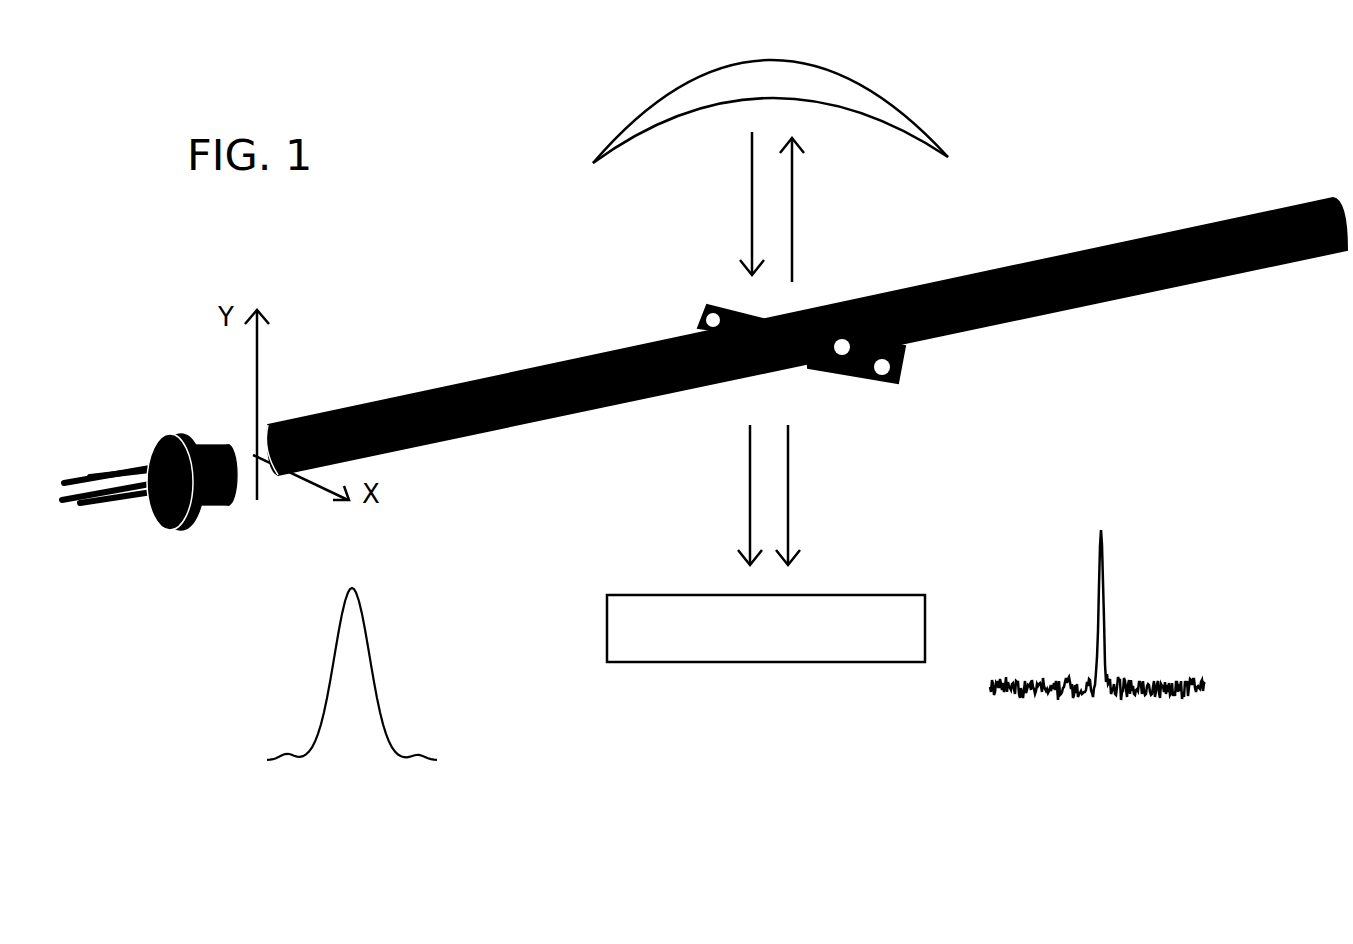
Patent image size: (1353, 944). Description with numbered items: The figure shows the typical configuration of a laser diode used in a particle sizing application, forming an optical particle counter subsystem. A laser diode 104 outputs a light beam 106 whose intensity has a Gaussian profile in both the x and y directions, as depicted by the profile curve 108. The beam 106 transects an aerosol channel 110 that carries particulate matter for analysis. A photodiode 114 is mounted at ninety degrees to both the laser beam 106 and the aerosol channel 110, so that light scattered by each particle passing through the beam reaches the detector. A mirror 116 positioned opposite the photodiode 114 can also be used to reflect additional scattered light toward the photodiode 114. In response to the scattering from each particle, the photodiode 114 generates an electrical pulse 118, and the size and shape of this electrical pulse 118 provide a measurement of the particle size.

The laser diode 104 is at (150, 433).
The light beam 106 is at (465, 380).
The Gaussian profile 108 is at (382, 677).
The aerosol channel 110 is at (697, 318).
The photodiode 114 is at (797, 665).
The mirror 116 is at (862, 73).
The electrical pulse 118 is at (1108, 610).